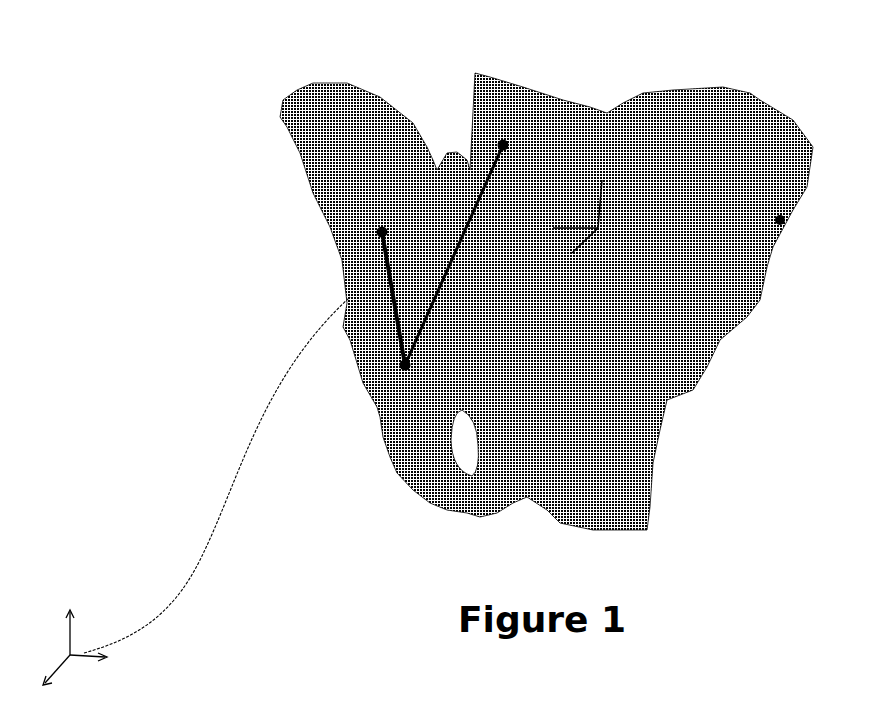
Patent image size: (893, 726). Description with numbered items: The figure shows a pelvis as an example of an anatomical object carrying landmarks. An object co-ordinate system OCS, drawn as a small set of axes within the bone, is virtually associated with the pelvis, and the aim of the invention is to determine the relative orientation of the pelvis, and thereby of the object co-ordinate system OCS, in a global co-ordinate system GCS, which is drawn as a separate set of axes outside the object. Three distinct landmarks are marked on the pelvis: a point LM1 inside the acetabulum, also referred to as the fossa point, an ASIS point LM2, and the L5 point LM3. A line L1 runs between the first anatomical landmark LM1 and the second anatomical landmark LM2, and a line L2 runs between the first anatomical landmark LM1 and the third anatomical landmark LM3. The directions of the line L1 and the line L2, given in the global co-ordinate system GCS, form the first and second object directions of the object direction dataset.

The line between the first and second anatomical landmarks L1 is at (392, 317).
The line between the first and third anatomical landmarks L2 is at (487, 177).
The first anatomical landmark LM1 is at (400, 370).
The second anatomical landmark LM2 is at (377, 237).
The third anatomical landmark LM3 is at (506, 141).
The object co-ordinate system OCS is at (603, 207).
The global co-ordinate system GCS is at (70, 637).